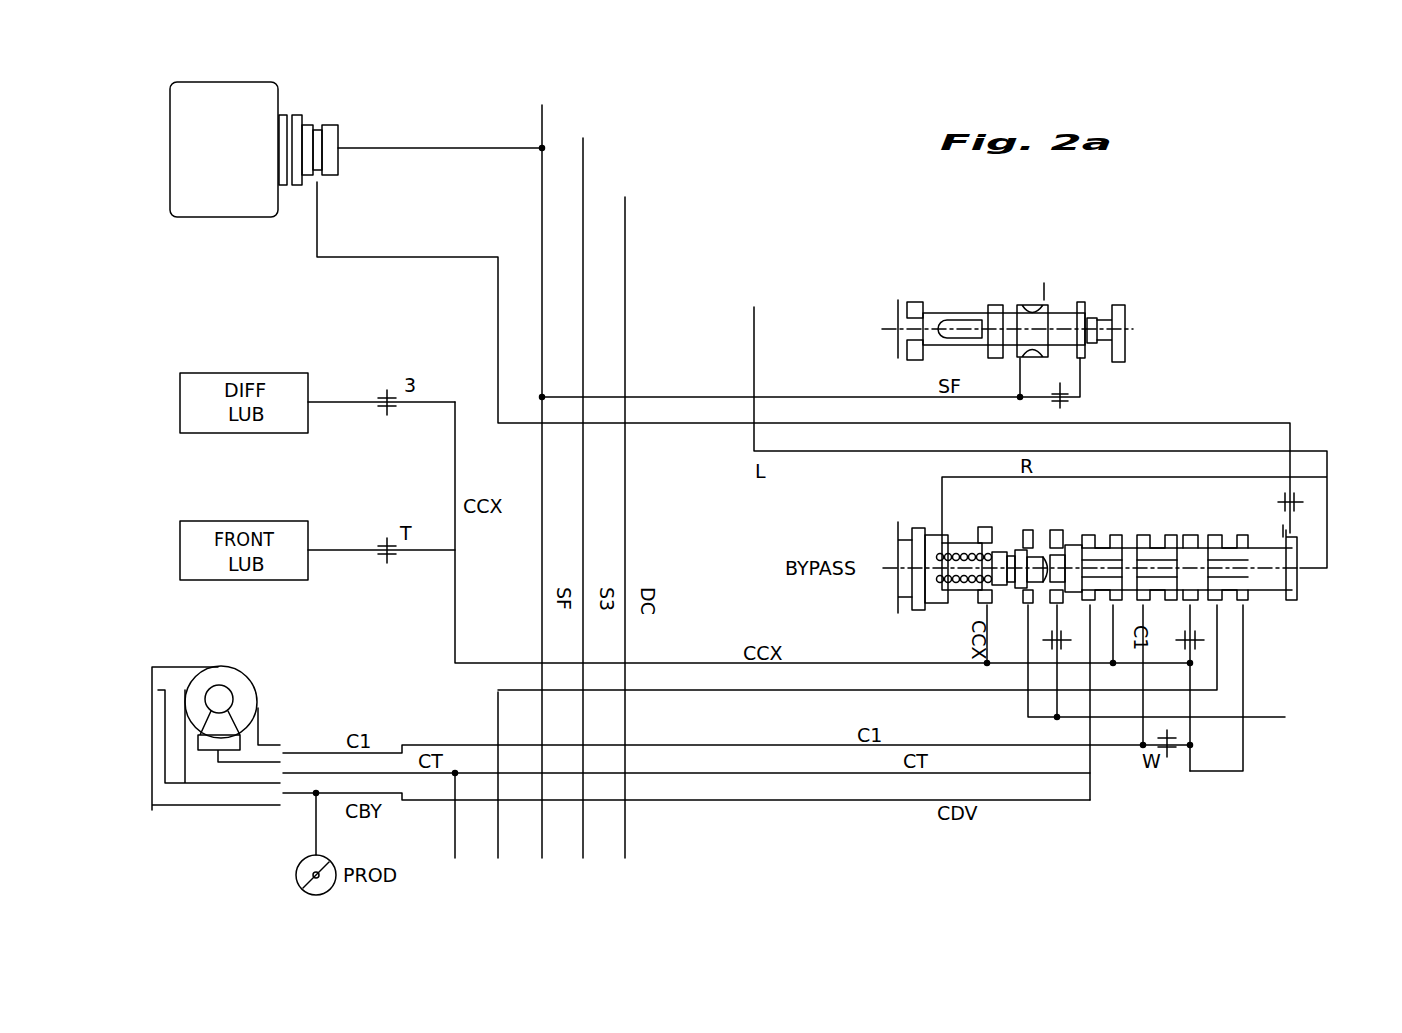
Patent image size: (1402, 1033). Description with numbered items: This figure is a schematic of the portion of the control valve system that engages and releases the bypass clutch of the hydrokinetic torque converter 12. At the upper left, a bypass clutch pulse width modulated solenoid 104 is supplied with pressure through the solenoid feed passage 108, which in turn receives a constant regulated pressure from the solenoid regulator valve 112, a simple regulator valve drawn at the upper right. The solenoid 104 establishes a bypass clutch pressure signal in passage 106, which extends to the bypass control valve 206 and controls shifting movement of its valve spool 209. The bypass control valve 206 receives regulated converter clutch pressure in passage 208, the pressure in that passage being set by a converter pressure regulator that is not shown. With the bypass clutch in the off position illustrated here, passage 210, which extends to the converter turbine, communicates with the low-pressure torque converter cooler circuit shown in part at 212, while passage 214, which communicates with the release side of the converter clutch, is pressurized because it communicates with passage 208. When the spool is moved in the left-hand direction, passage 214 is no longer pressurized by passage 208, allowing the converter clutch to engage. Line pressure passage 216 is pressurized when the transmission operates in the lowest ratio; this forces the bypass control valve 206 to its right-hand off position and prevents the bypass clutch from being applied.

The hydrokinetic torque converter 12 is at (258, 700).
The bypass clutch pulse width modulated solenoid 104 is at (222, 218).
The bypass clutch pressure signal passage 106 is at (428, 255).
The solenoid feed passage 108 is at (500, 138).
The solenoid regulator valve 112 is at (1108, 306).
The bypass control valve 206 is at (1166, 538).
The regulated converter clutch pressure passage 208 is at (1190, 762).
The valve spool 209 is at (1148, 560).
The converter turbine passage 210 is at (1245, 735).
The torque converter cooler circuit 212 is at (995, 690).
The release side passage 214 is at (1090, 760).
The line pressure passage 216 is at (1275, 717).